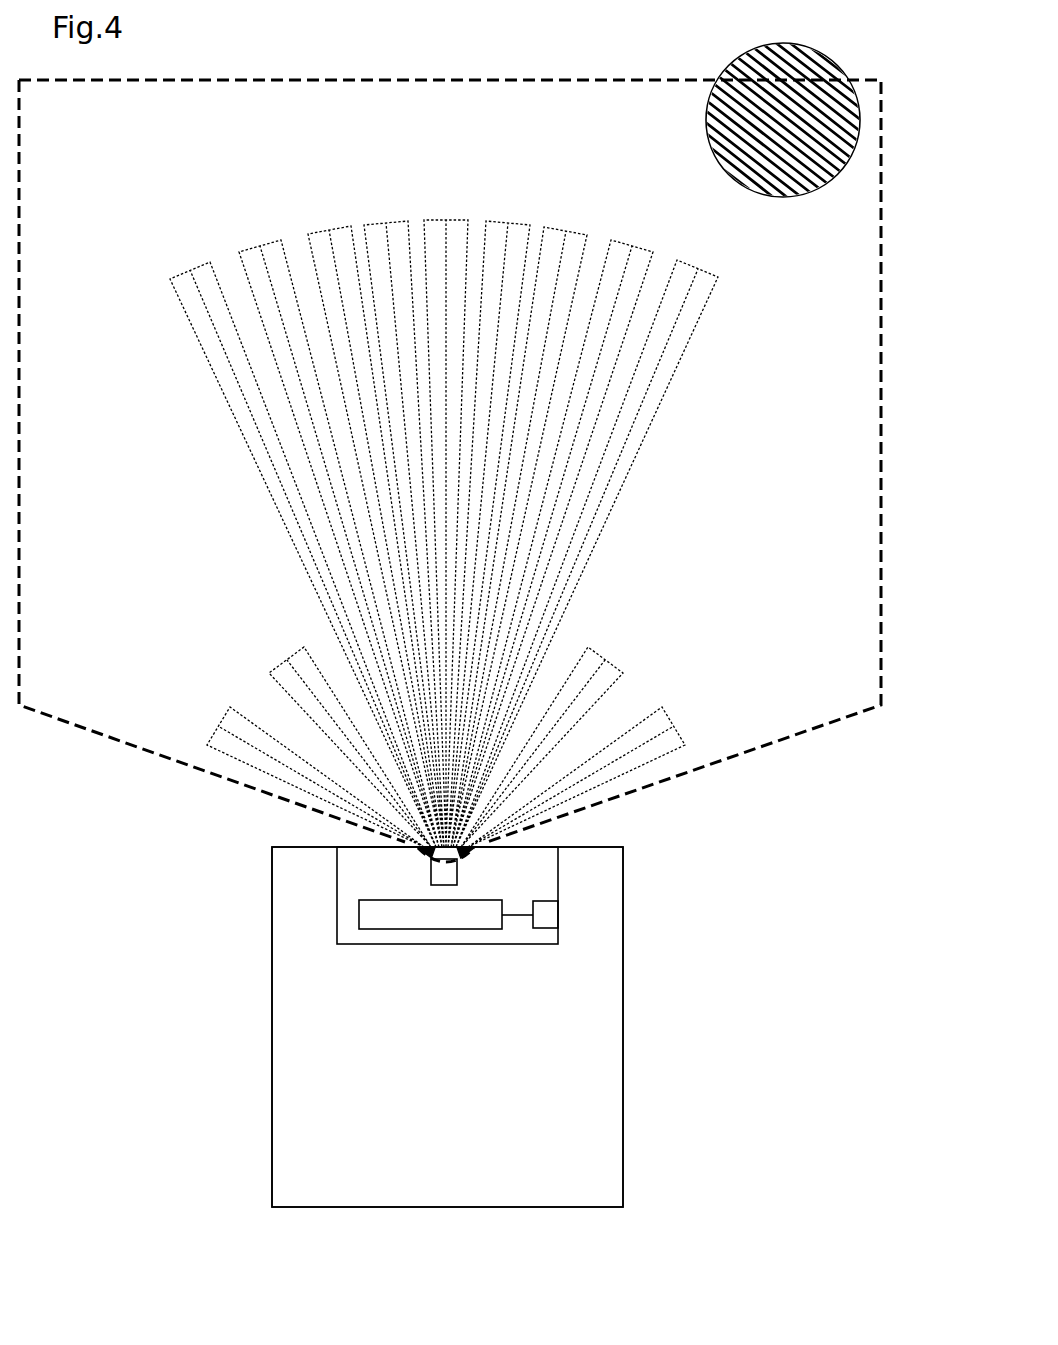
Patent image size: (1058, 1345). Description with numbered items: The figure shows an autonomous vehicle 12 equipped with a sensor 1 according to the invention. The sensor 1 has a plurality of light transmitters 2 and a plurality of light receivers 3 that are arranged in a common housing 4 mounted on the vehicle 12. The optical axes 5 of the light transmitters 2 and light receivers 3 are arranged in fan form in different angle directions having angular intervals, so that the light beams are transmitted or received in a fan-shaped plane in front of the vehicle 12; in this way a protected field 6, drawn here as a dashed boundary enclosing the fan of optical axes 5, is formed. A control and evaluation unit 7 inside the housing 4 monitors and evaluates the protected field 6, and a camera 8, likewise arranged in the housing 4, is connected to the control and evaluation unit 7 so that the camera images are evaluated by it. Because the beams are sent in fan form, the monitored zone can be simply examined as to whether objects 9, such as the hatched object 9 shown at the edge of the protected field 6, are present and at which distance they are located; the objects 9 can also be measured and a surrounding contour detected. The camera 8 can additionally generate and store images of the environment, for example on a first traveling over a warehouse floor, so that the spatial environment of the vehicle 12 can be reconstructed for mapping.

The sensor 1 is at (302, 893).
The light transmitter 2 is at (454, 910).
The light receiver 3 is at (400, 841).
The housing 4 is at (560, 880).
The optical axis 5 is at (198, 288).
The protected field 6 is at (840, 268).
The control and evaluation unit 7 is at (367, 922).
The camera 8 is at (442, 877).
The object 9 is at (762, 162).
The autonomous vehicle 12 is at (662, 1053).